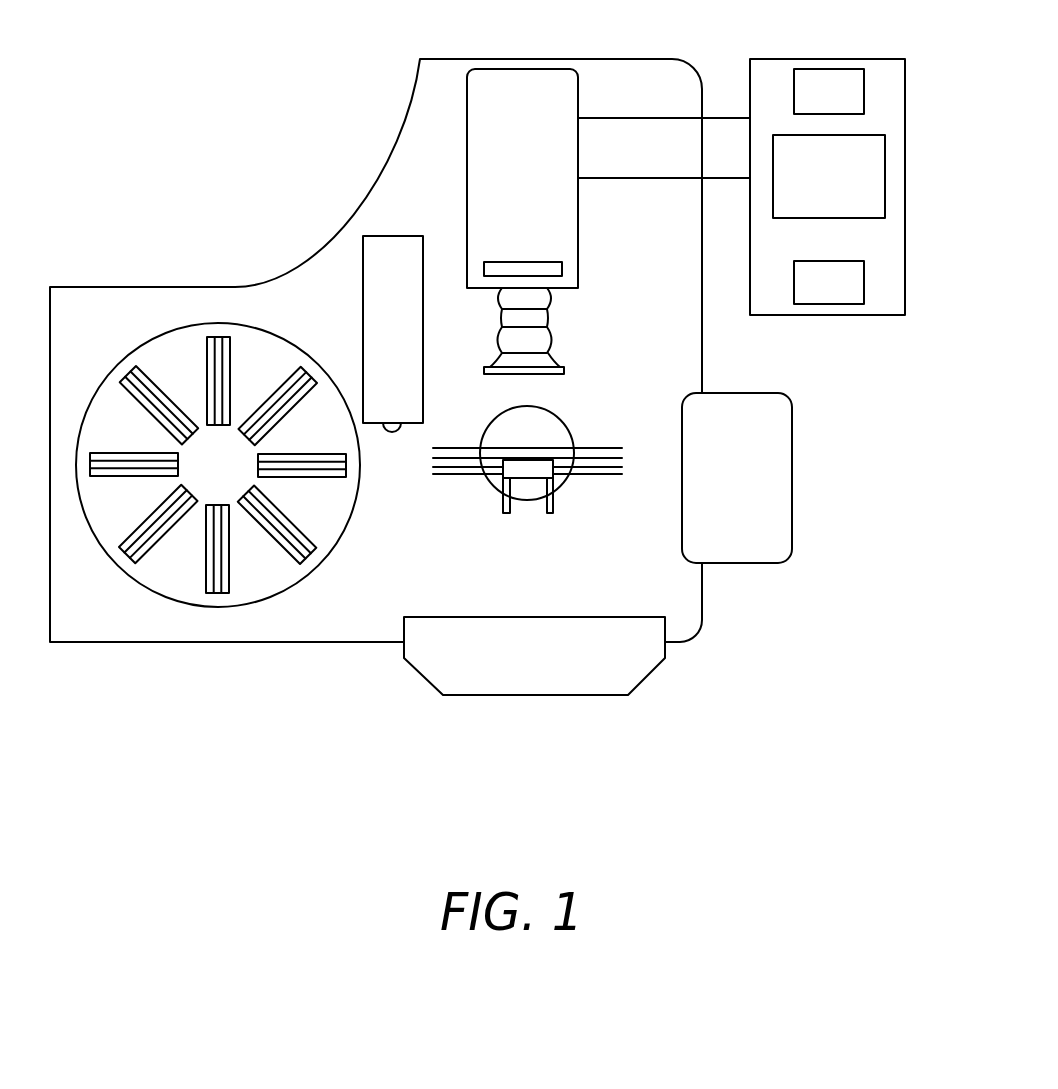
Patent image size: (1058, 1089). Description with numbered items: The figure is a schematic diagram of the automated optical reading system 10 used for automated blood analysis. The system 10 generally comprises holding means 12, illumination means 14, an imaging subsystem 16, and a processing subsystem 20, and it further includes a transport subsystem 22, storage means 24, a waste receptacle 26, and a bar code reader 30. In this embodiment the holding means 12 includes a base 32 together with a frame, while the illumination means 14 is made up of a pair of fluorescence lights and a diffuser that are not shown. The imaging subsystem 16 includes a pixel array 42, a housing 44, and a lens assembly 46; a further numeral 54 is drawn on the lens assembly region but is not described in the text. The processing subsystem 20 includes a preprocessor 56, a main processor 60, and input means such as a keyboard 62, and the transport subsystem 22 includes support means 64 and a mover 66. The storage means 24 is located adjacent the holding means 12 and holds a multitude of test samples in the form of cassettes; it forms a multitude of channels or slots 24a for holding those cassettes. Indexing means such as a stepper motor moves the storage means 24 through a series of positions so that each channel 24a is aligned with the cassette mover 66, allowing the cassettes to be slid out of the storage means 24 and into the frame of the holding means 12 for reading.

The automated optical reading system 10 is at (283, 78).
The holding means 12 is at (537, 454).
The illumination means 14 is at (411, 683).
The imaging subsystem 16 is at (608, 178).
The processing subsystem 20 is at (792, 162).
The transport subsystem 22 is at (465, 484).
The storage means 24 is at (218, 514).
The channels or slots 24a is at (262, 410).
The waste receptacle 26 is at (792, 527).
The bar code reader 30 is at (393, 236).
The base 32 is at (528, 420).
The pixel array 42 is at (529, 262).
The housing 44 is at (580, 103).
The lens assembly 46 is at (526, 331).
The bellows segment 54 is at (502, 312).
The preprocessor 56 is at (812, 106).
The main processor 60 is at (812, 192).
The keyboard 62 is at (812, 298).
The support means 64 is at (612, 476).
The mover 66 is at (555, 493).